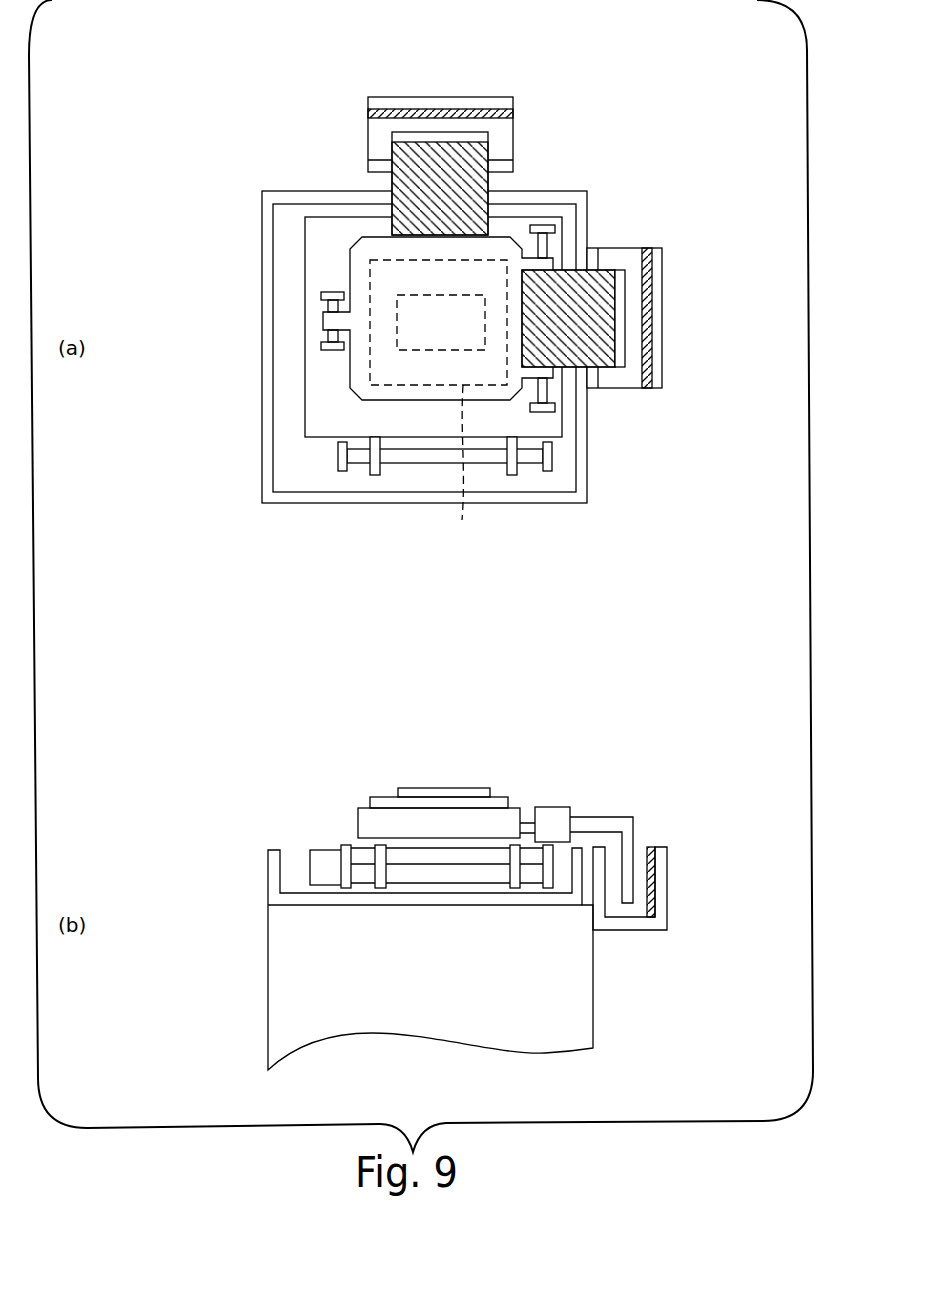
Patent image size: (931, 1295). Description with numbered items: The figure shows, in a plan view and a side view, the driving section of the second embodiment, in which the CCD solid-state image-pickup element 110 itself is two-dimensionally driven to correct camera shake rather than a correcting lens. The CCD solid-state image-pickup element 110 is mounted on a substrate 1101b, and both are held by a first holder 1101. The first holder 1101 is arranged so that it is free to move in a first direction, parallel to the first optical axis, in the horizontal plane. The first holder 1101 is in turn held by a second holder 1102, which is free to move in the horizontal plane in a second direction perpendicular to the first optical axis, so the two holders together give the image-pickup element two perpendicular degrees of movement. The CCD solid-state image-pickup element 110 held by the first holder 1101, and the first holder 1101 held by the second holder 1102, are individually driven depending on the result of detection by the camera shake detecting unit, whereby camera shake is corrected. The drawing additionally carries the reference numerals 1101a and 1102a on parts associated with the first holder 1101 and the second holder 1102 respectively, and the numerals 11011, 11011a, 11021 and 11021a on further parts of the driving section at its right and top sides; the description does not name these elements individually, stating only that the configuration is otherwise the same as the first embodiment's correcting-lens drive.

The CCD solid-state image-pickup element 110 is at (440, 320).
The first holder 1101 is at (375, 245).
The coil of movable stage 1101a is at (618, 357).
The substrate 1101b is at (498, 798).
The second holder 1102 is at (327, 415).
The coil of fixed stage 1102a is at (477, 133).
The yoke 11011 is at (656, 343).
The magnet 11011a is at (645, 255).
The yoke 11021 is at (413, 100).
The magnet 11021a is at (498, 113).